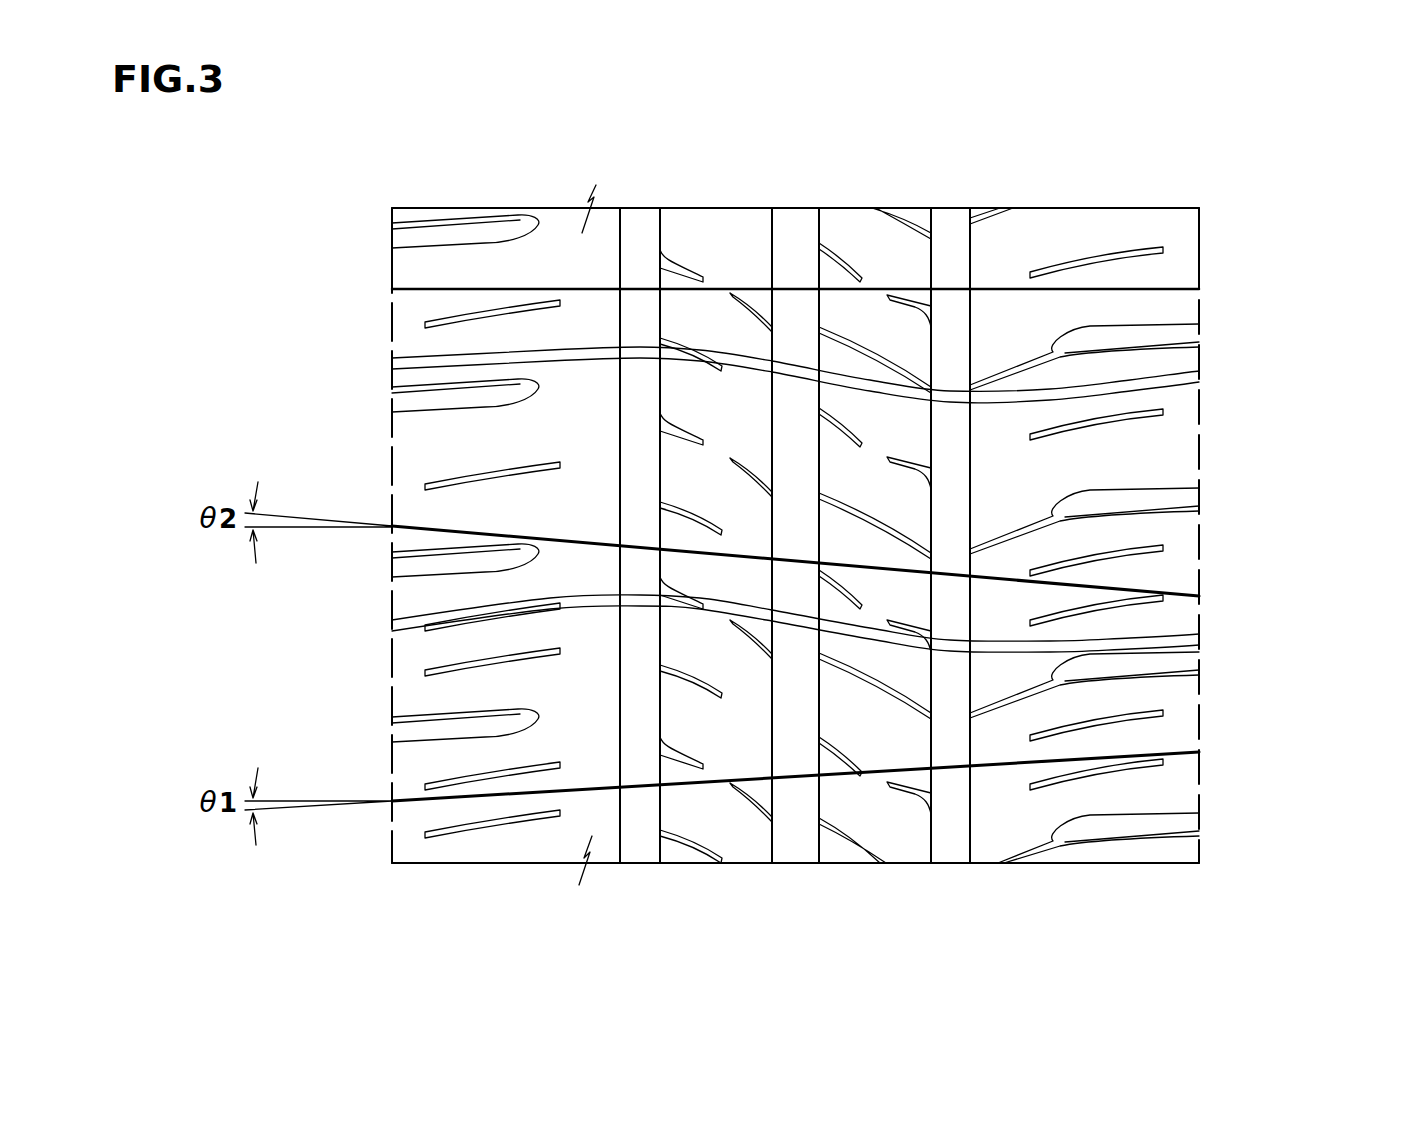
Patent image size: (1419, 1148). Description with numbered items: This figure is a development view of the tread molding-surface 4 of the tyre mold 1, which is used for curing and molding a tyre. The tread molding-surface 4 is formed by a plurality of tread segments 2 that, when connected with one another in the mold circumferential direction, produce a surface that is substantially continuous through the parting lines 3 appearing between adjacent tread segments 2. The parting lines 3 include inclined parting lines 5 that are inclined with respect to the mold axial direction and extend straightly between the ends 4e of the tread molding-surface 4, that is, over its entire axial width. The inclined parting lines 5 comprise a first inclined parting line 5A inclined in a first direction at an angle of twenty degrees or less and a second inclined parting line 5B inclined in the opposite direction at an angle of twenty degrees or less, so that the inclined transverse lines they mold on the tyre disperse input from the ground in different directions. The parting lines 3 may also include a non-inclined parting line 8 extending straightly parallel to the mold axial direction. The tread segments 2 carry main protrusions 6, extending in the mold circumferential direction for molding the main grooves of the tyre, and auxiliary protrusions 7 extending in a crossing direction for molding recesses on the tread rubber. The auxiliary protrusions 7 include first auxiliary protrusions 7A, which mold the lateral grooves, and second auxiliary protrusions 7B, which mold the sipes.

The tyre mold 1 is at (1220, 146).
The tread segments 2 is at (1236, 336).
The parting lines 3 is at (816, 549).
The tread molding-surface 4 is at (1132, 224).
The ends of the tread molding-surface 4e is at (388, 285).
The inclined parting lines 5 is at (792, 661).
The first inclined parting line 5A is at (1183, 748).
The second inclined parting line 5B is at (1167, 598).
The main protrusions 6 is at (641, 238).
The auxiliary protrusions 7 is at (297, 293).
The first auxiliary protrusions 7A is at (463, 237).
The second auxiliary protrusions 7B is at (477, 322).
The non-inclined parting lines 8 is at (1123, 291).